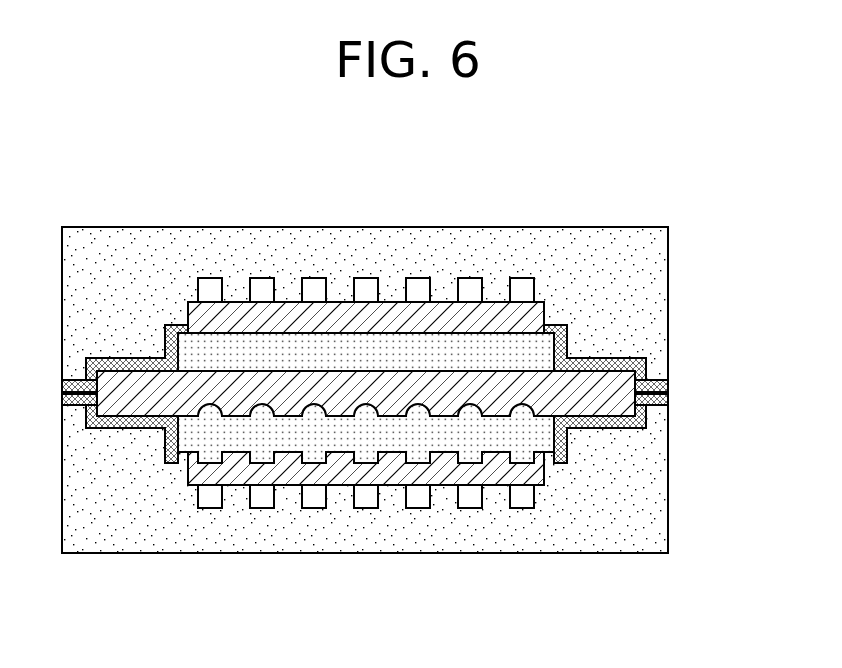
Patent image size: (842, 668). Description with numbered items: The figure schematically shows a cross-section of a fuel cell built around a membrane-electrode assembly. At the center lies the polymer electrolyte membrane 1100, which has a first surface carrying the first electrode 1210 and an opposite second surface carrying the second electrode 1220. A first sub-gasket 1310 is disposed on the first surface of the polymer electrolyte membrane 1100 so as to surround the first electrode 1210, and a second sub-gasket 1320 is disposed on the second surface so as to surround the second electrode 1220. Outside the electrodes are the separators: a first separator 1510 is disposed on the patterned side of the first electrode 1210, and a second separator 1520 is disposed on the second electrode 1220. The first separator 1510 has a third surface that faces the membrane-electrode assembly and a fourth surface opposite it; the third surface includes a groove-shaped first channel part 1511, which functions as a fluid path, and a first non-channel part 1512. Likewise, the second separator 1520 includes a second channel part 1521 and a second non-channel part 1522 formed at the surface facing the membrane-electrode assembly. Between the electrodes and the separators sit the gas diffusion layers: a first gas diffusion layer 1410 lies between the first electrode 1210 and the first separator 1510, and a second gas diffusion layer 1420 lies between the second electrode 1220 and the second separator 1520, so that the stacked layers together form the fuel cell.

The polymer electrolyte membrane 1100 is at (600, 397).
The first electrode 1210 is at (493, 430).
The second electrode 1220 is at (493, 356).
The first sub-gasket 1310 is at (668, 399).
The second sub-gasket 1320 is at (668, 384).
The first gas diffusion layer 1410 is at (393, 465).
The second gas diffusion layer 1420 is at (393, 320).
The first separator 1510 is at (597, 523).
The first channel part 1511 is at (263, 513).
The first non-channel part 1512 is at (339, 495).
The second separator 1520 is at (597, 262).
The second channel part 1521 is at (263, 273).
The second non-channel part 1522 is at (339, 290).